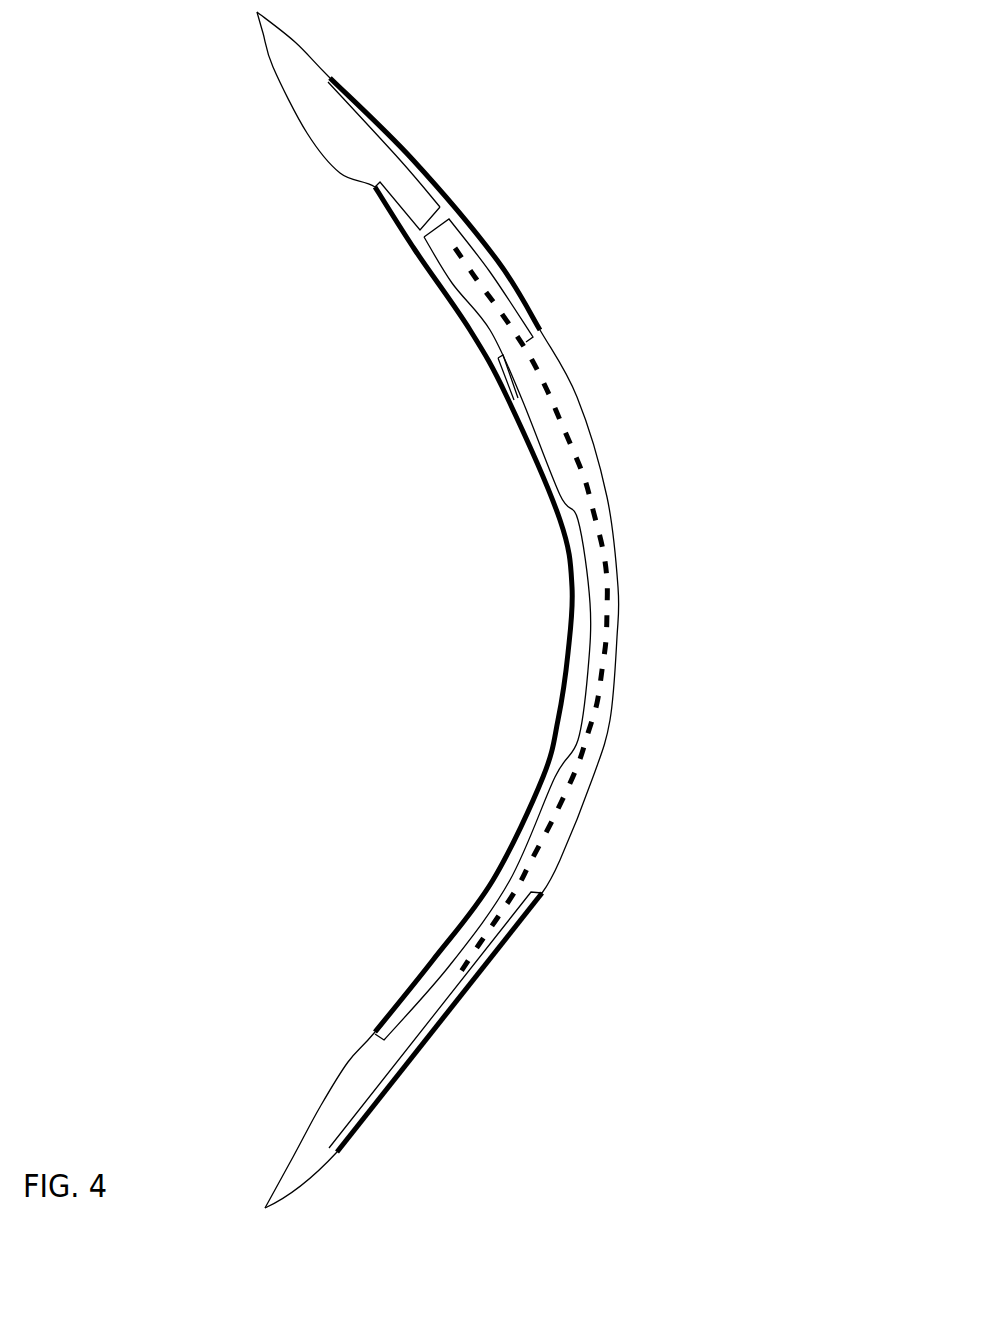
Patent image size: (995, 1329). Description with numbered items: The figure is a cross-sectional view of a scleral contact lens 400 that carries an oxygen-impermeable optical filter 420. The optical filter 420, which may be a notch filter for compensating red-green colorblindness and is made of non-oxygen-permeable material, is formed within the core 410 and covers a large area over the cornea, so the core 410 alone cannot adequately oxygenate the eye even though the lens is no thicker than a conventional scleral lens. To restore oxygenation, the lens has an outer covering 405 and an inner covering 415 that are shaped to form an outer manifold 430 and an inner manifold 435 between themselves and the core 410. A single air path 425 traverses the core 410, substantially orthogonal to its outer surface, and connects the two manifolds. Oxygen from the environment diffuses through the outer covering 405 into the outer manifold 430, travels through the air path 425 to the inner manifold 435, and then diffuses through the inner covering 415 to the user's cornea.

The contact lens 400 is at (745, 936).
The outer covering 405 is at (420, 157).
The core 410 is at (348, 143).
The inner covering 415 is at (440, 285).
The optical filter 420 is at (540, 380).
The air path 425 is at (427, 238).
The outer manifold 430 is at (343, 97).
The inner manifold 435 is at (502, 362).